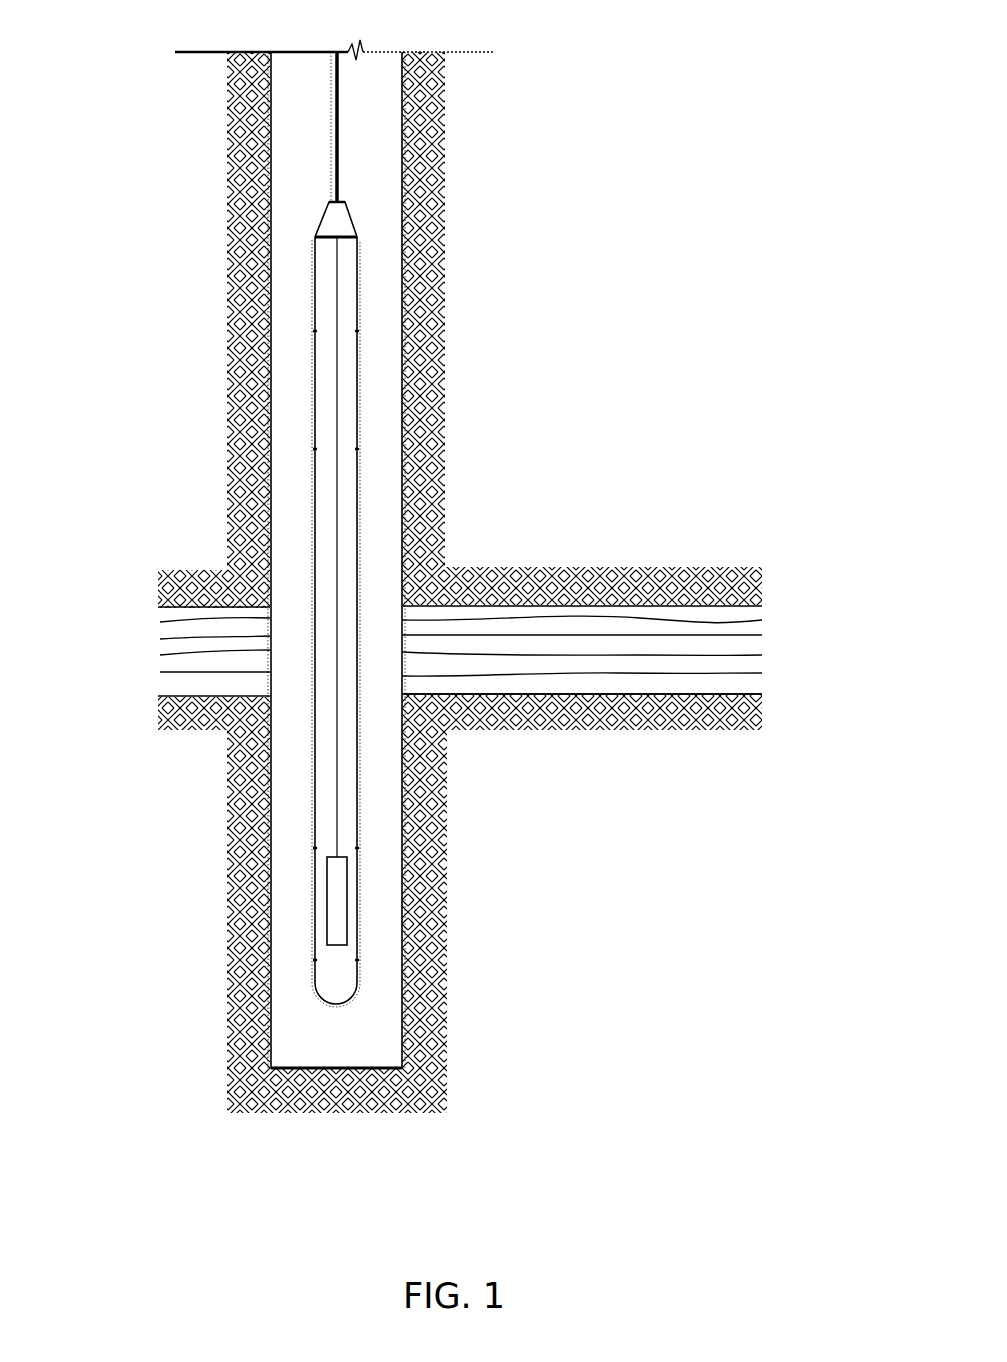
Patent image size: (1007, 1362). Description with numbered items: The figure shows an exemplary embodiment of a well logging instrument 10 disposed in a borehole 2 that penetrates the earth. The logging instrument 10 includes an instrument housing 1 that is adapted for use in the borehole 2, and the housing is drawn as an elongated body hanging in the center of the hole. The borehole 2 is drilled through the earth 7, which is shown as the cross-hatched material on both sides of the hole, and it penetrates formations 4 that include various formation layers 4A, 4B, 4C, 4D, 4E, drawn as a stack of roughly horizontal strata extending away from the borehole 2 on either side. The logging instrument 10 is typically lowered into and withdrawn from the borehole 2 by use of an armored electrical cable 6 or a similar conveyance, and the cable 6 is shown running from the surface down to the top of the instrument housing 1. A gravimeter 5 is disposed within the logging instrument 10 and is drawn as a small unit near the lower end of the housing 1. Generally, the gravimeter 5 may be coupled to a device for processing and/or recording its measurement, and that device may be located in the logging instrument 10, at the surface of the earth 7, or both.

The instrument housing 1 is at (314, 799).
The borehole 2 is at (386, 121).
The formations 4 is at (460, 655).
The formation layer 4A is at (763, 609).
The formation layer 4B is at (763, 626).
The formation layer 4C is at (763, 643).
The formation layer 4D is at (763, 660).
The formation layer 4E is at (763, 684).
The gravimeter 5 is at (326, 873).
The armored electrical cable 6 is at (336, 128).
The earth 7 is at (430, 915).
The well logging instrument 10 is at (318, 604).